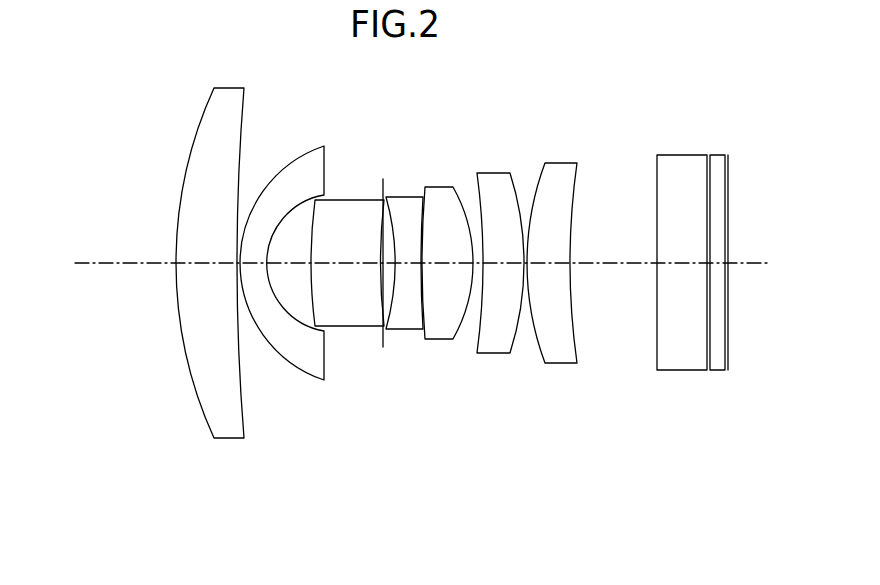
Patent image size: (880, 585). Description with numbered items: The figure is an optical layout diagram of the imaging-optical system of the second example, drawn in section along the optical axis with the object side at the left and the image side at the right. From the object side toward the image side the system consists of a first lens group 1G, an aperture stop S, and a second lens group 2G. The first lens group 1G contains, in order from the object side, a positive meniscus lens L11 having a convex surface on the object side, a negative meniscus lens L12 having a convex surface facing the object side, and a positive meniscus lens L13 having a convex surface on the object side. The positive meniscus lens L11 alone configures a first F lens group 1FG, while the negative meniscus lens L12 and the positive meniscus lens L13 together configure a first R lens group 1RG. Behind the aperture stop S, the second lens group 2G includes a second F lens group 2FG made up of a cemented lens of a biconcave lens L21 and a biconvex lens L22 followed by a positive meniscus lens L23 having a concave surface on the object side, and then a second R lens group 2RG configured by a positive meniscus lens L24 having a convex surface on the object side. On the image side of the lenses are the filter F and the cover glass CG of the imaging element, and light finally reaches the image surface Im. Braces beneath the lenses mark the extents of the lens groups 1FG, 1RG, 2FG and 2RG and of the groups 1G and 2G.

The positive meniscus lens L11 is at (223, 255).
The negative meniscus lens L12 is at (311, 192).
The positive meniscus lens L13 is at (362, 255).
The aperture stop S is at (383, 181).
The biconcave lens L21 is at (408, 315).
The biconvex lens L22 is at (443, 325).
The positive meniscus lens L23 is at (500, 292).
The positive meniscus lens L24 is at (557, 348).
The filter F is at (672, 162).
The cover glass CG is at (717, 160).
The image surface Im is at (728, 167).
The first F lens group 1FG is at (210, 289).
The first R lens group 1RG is at (312, 318).
The second F lens group 2FG is at (449, 332).
The second R lens group 2RG is at (554, 327).
The first lens group 1G is at (278, 319).
The second lens group 2G is at (480, 357).